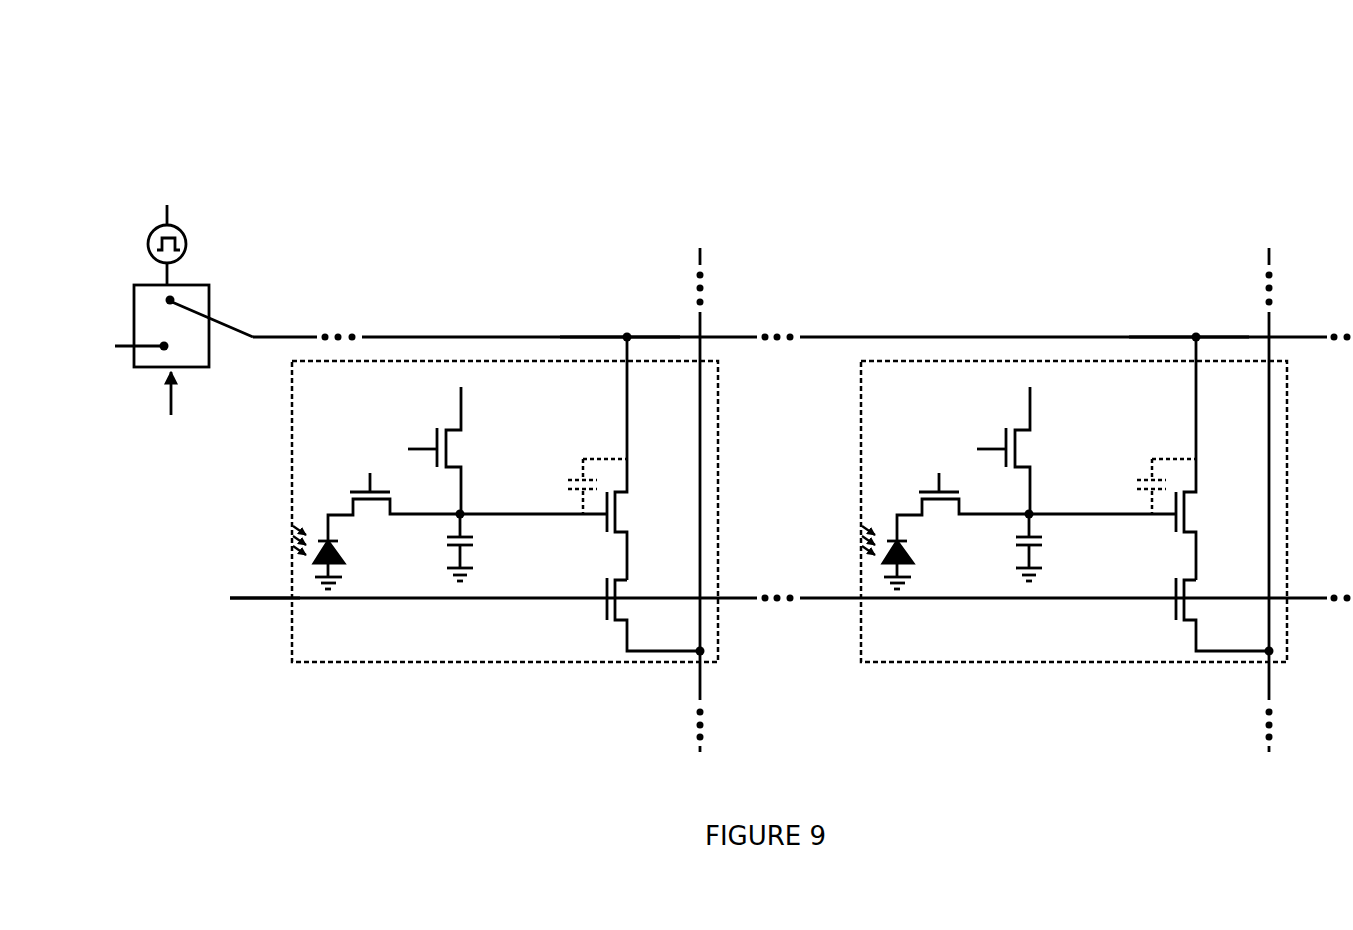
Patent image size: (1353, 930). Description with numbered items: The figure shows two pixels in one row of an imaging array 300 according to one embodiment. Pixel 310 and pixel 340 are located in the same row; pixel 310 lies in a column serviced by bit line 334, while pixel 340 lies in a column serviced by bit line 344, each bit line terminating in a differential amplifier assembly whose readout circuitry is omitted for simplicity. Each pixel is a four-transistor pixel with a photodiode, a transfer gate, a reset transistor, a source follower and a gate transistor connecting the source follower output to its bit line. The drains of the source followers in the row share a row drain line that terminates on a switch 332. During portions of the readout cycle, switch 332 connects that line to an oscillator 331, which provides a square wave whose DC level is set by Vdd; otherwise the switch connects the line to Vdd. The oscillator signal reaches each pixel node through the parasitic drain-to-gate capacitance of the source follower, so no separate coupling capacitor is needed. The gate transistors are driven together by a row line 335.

The pixel array circuit 300 is at (1130, 163).
The oscillator 331 is at (186, 240).
The switch 332 is at (209, 297).
The bit line 334 is at (702, 541).
The row select line 335 is at (248, 600).
The pixel 310 is at (313, 662).
The pixel 340 is at (1074, 534).
The bit line 344 is at (1305, 500).